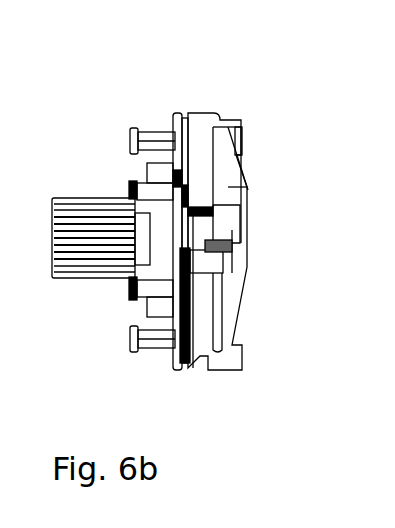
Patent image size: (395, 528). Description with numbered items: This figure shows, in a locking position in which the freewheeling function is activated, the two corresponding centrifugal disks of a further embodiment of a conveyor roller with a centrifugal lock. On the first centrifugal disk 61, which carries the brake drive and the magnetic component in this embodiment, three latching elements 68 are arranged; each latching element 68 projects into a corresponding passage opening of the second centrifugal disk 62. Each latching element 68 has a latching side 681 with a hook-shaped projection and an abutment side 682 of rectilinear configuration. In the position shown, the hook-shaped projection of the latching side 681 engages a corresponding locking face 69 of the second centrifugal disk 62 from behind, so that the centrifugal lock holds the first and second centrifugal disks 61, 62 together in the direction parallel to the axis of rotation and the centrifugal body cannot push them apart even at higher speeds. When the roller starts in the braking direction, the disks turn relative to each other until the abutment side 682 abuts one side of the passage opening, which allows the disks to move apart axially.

The first centrifugal disk 61 is at (172, 117).
The second centrifugal disk 62 is at (201, 120).
The latching element 68 is at (243, 215).
The locking face 69 is at (200, 205).
The latching side 681 is at (215, 210).
The abutment side 682 is at (228, 243).